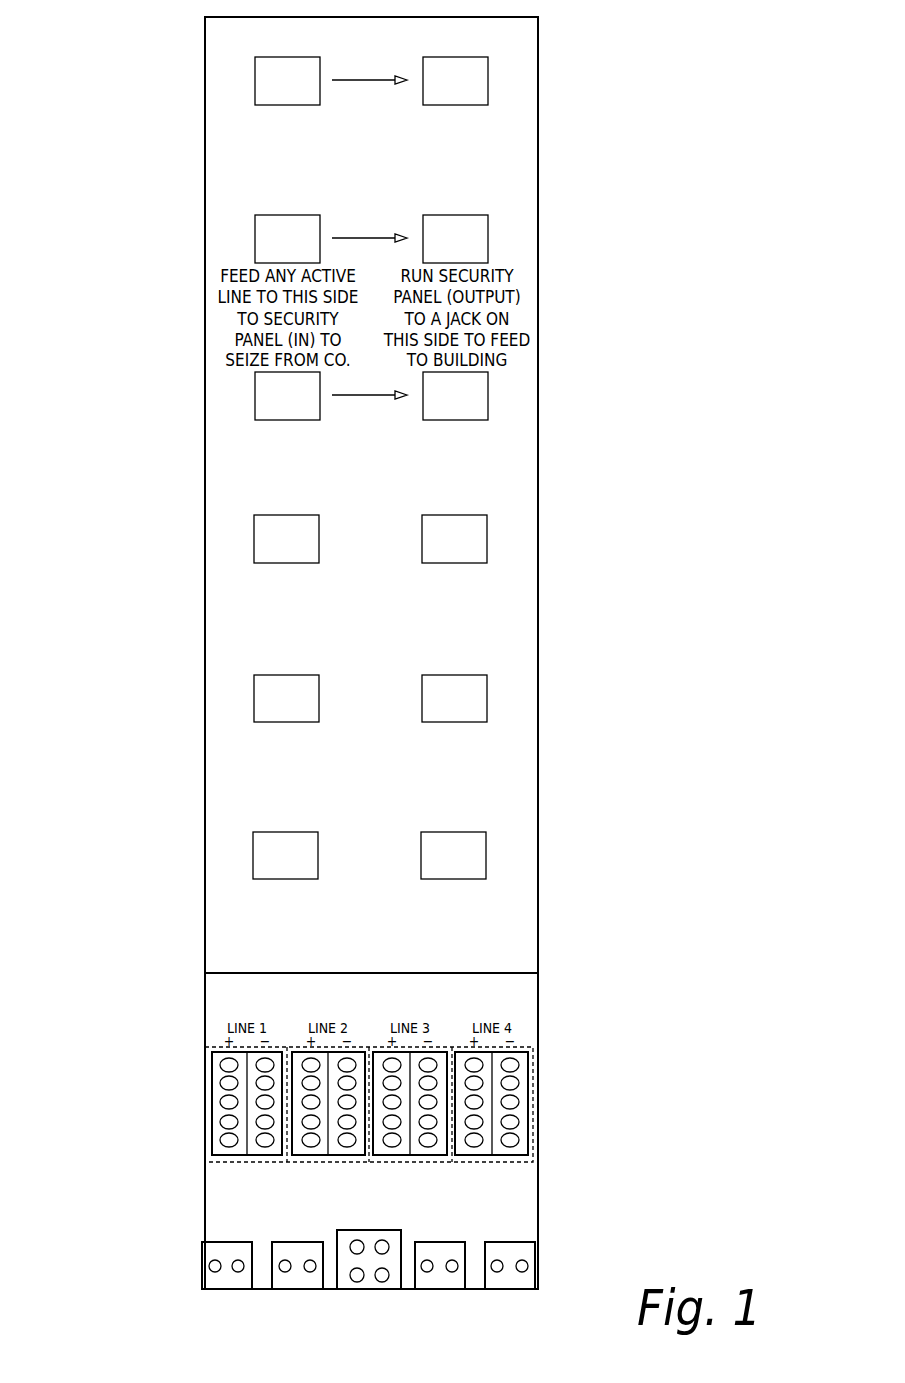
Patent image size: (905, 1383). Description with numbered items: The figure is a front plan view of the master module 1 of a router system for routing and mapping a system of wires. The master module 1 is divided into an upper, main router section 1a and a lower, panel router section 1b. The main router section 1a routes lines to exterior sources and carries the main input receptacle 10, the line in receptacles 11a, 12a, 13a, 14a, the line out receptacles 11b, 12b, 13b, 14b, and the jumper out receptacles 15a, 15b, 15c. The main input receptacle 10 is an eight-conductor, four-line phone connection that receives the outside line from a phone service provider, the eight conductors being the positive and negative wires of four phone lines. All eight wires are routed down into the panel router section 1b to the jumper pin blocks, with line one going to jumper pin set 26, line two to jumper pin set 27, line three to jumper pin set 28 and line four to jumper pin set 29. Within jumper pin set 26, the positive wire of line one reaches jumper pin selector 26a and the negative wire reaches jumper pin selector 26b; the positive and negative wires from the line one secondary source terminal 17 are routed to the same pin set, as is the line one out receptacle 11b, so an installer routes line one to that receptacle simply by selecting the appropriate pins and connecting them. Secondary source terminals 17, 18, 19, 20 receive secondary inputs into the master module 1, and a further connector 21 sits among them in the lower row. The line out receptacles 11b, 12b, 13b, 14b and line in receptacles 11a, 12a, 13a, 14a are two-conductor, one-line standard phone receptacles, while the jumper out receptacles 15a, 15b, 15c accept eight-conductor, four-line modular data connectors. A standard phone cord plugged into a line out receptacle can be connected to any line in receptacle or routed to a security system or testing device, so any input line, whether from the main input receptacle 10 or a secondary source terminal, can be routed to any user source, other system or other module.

The master module 1 is at (124, 47).
The main router section 1a is at (163, 468).
The panel router section 1b is at (183, 1103).
The main input receptacle 10 is at (252, 858).
The line one in receptacle 11a is at (488, 82).
The line one out receptacle 11b is at (253, 87).
The line two in receptacle 12a is at (488, 240).
The line two out receptacle 12b is at (253, 240).
The line three in receptacle 13a is at (488, 398).
The line three out receptacle 13b is at (253, 400).
The line four in receptacle 14a is at (487, 546).
The line four out receptacle 14b is at (253, 548).
The jumper out receptacle 15a is at (487, 696).
The jumper out receptacle 15b is at (253, 698).
The jumper out receptacle 15c is at (486, 856).
The line one secondary source terminal 17 is at (222, 1290).
The line two secondary source terminal 18 is at (295, 1290).
The line three secondary source terminal 19 is at (435, 1290).
The line four secondary source terminal 20 is at (510, 1290).
The four-terminal connector 21 is at (368, 1290).
The jumper pin set 26 is at (223, 1130).
The jumper pin selector 26a is at (227, 1156).
The jumper pin selector 26b is at (267, 1156).
The jumper pin set 27 is at (315, 1163).
The jumper pin set 28 is at (398, 1163).
The jumper pin set 29 is at (475, 1163).